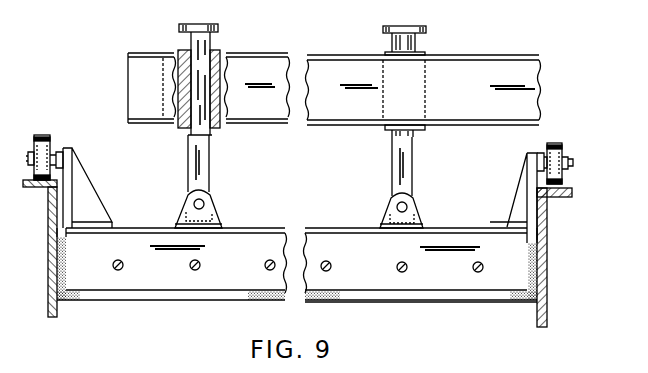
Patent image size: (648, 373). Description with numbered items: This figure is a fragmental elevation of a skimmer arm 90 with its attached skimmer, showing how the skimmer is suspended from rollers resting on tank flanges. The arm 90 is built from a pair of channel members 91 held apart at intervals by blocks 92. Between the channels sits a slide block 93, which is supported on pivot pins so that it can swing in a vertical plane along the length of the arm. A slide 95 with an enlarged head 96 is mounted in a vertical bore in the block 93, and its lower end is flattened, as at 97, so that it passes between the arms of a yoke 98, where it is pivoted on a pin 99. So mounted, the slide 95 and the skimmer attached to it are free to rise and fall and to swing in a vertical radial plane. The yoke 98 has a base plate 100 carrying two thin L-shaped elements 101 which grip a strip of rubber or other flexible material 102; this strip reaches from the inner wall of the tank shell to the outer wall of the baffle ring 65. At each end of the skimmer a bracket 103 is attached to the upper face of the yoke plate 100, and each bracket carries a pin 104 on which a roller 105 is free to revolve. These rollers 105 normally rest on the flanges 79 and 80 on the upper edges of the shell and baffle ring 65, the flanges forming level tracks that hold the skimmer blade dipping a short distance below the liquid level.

The baffle ring 65 is at (549, 272).
The flange 79 is at (27, 190).
The flange 80 is at (48, 258).
The skimmer arm 90 is at (342, 36).
The channel member 91 is at (472, 66).
The block 92 is at (140, 74).
The slide block 93 is at (178, 130).
The slide 95 is at (212, 38).
The enlarged head 96 is at (178, 28).
The flattened lower end 97 is at (208, 172).
The yoke 98 is at (222, 220).
The pin 99 is at (204, 202).
The base plate 100 is at (268, 228).
The L-shaped element 101 is at (342, 238).
The strip of flexible material 102 is at (395, 297).
The bracket 103 is at (92, 195).
The pin 104 is at (62, 148).
The roller 105 is at (44, 134).